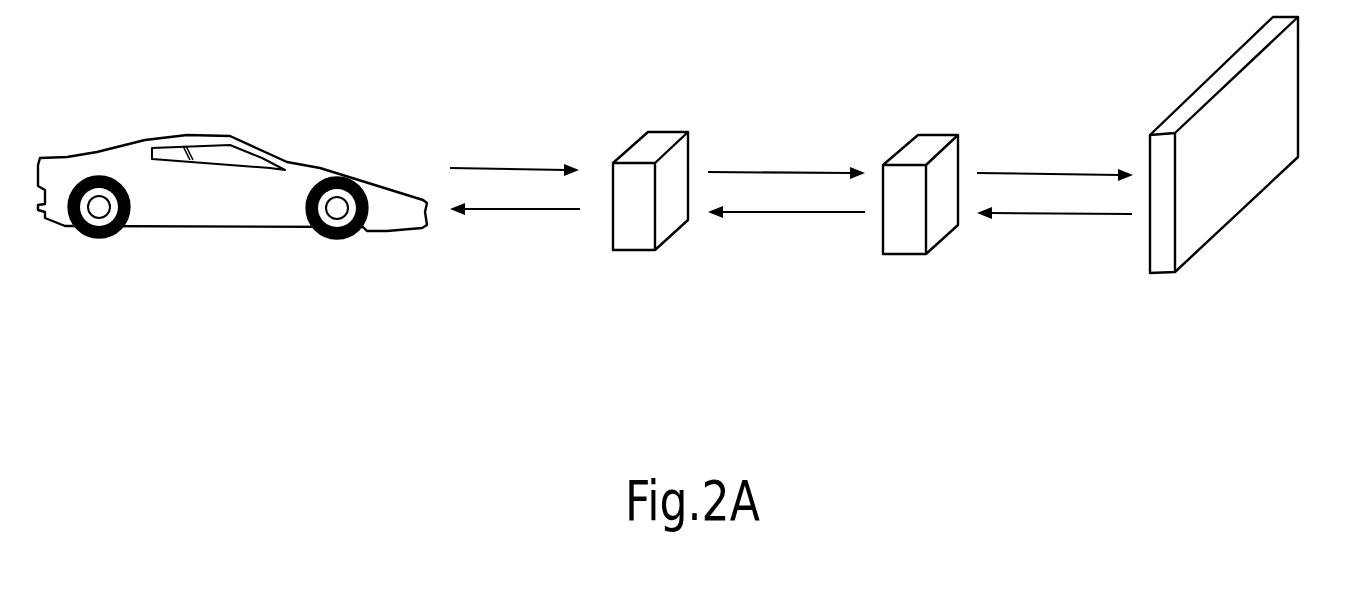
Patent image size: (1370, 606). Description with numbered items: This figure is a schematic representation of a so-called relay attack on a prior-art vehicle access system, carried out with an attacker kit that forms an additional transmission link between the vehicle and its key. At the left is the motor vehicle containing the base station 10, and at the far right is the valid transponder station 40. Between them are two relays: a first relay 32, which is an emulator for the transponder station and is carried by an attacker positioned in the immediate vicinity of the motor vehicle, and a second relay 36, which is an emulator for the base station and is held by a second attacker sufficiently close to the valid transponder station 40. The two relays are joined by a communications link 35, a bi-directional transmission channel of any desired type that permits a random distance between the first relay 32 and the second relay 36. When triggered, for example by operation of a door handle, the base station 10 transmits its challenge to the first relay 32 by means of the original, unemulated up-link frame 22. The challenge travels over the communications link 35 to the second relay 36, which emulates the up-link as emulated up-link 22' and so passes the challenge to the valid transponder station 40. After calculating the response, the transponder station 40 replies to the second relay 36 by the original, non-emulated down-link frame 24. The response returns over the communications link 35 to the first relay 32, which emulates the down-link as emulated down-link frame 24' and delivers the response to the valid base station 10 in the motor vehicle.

The base station 10 is at (213, 231).
The up-link frame 22 is at (514, 132).
The emulated down-link frame 24' is at (515, 249).
The first relay 32 is at (660, 147).
The communications link 35 is at (787, 172).
The second relay 36 is at (930, 147).
The emulated up-link 22' is at (1055, 136).
The down-link frame 24 is at (1054, 255).
The transponder station 40 is at (1282, 88).